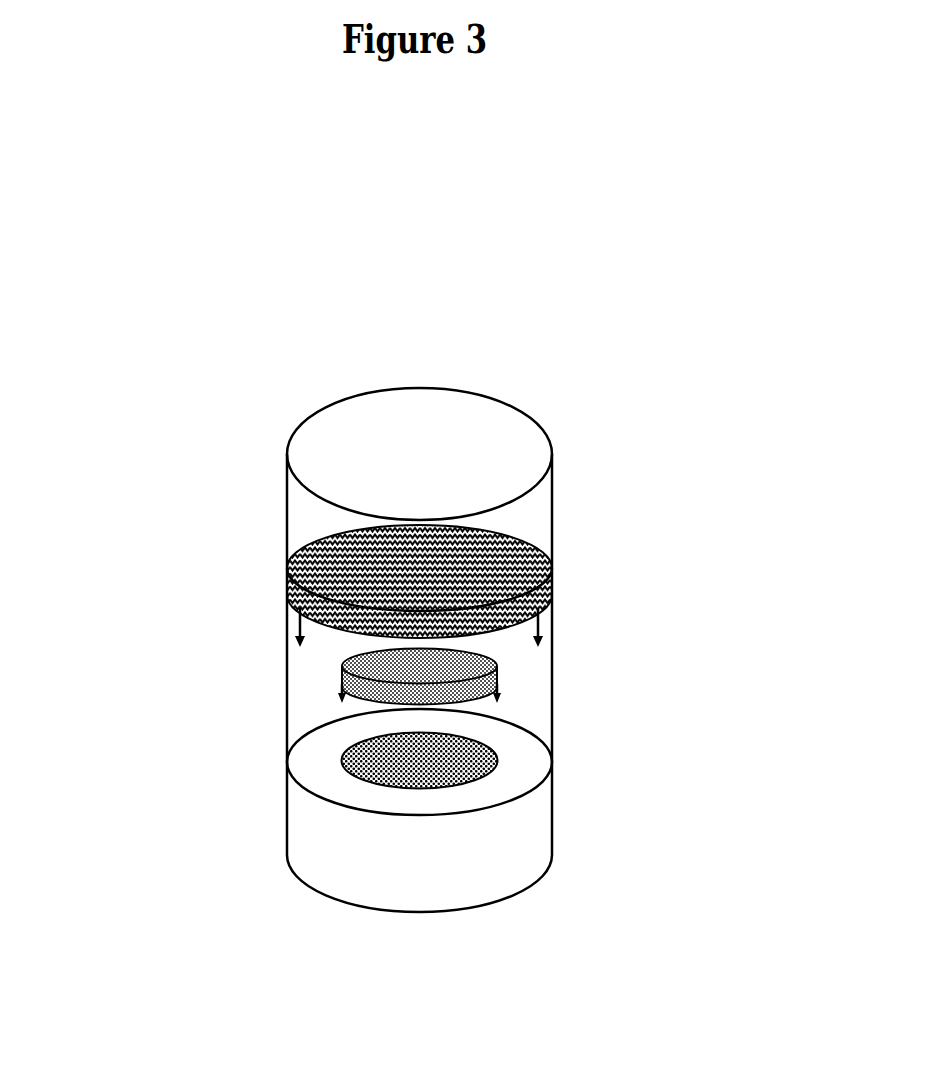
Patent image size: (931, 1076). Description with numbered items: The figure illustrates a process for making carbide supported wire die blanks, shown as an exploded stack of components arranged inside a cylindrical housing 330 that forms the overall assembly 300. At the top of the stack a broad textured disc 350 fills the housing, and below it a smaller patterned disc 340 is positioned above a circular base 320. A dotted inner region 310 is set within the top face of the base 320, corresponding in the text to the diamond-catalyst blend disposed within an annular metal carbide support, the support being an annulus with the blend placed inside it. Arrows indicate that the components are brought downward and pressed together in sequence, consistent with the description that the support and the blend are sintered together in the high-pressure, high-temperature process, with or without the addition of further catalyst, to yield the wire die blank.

The filtration assembly 300 is at (399, 337).
The filter membrane 310 is at (457, 760).
The base support 320 is at (509, 843).
The cylindrical housing 330 is at (275, 665).
The sample disc 340 is at (450, 662).
The porous filter pad 350 is at (482, 582).